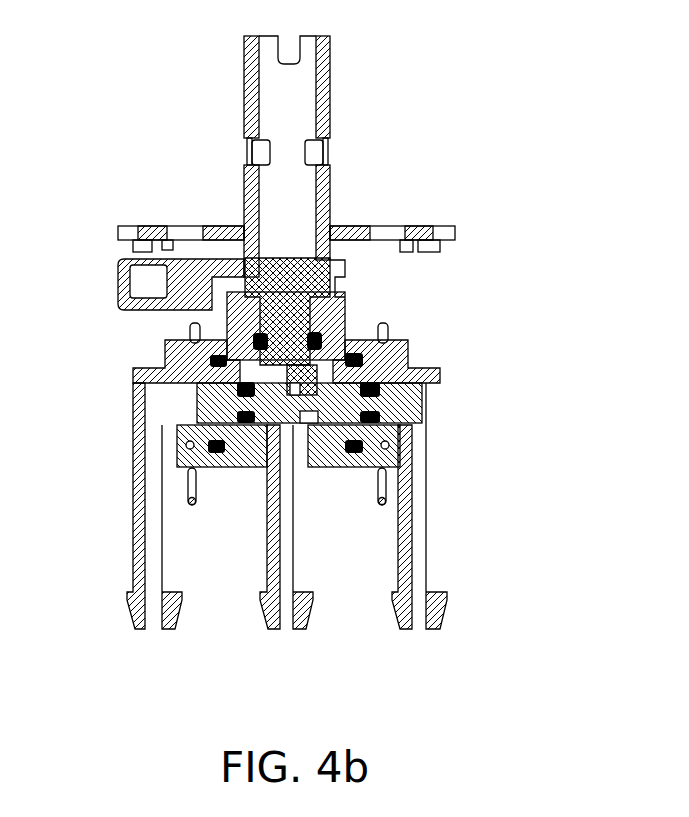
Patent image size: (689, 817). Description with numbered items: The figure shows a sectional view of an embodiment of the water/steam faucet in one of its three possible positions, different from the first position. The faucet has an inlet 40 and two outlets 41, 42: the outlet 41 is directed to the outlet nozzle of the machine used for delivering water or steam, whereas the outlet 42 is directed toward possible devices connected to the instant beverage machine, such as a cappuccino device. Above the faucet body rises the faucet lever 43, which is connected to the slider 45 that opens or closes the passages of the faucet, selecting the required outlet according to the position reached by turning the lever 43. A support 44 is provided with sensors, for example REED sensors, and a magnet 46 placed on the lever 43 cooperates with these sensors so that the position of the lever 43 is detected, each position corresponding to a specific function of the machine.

The inlet 40 is at (287, 629).
The outlet 41 is at (153, 629).
The outlet 42 is at (418, 629).
The faucet lever 43 is at (302, 100).
The support 44 is at (455, 232).
The slider 45 is at (412, 403).
The magnet 46 is at (118, 284).